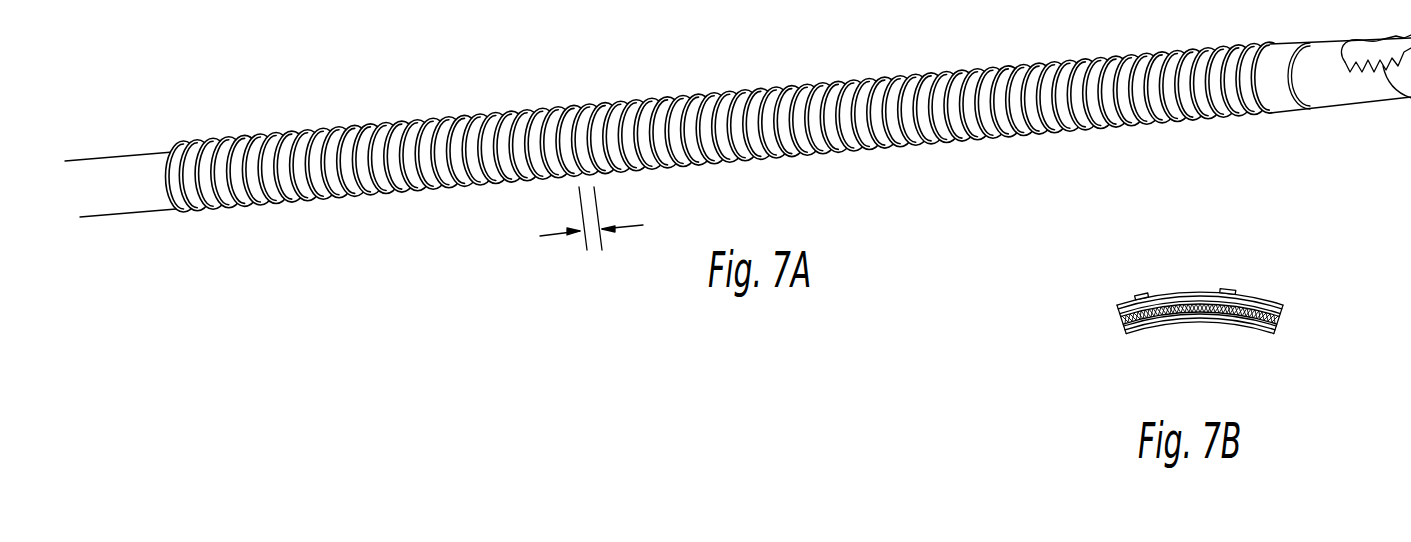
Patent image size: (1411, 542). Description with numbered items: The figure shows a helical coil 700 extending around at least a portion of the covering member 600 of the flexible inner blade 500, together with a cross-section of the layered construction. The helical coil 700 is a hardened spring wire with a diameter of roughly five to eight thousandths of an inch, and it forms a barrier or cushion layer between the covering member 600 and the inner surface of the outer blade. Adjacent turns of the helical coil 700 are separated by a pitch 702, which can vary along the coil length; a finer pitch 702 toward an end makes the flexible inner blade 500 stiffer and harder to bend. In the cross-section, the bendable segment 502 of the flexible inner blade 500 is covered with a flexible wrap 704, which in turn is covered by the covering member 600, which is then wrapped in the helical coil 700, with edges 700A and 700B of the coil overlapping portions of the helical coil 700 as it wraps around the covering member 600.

In FIG. 7A, the flexible inner blade 500 is at (120, 163).
In FIG. 7A, the covering member 600 is at (1293, 112).
In FIG. 7B, the covering member 600 is at (1230, 296).
In FIG. 7A, the helical coil 700 is at (1003, 140).
In FIG. 7B, the helical coil 700 is at (1192, 292).
In FIG. 7B, the edge of the helical coil 700A is at (1138, 295).
In FIG. 7B, the edge of the helical coil 700B is at (1131, 295).
In FIG. 7A, the pitch 702 is at (553, 236).
In FIG. 7B, the flexible wrap 704 is at (1173, 314).
In FIG. 7B, the bendable segment 502 is at (1248, 318).